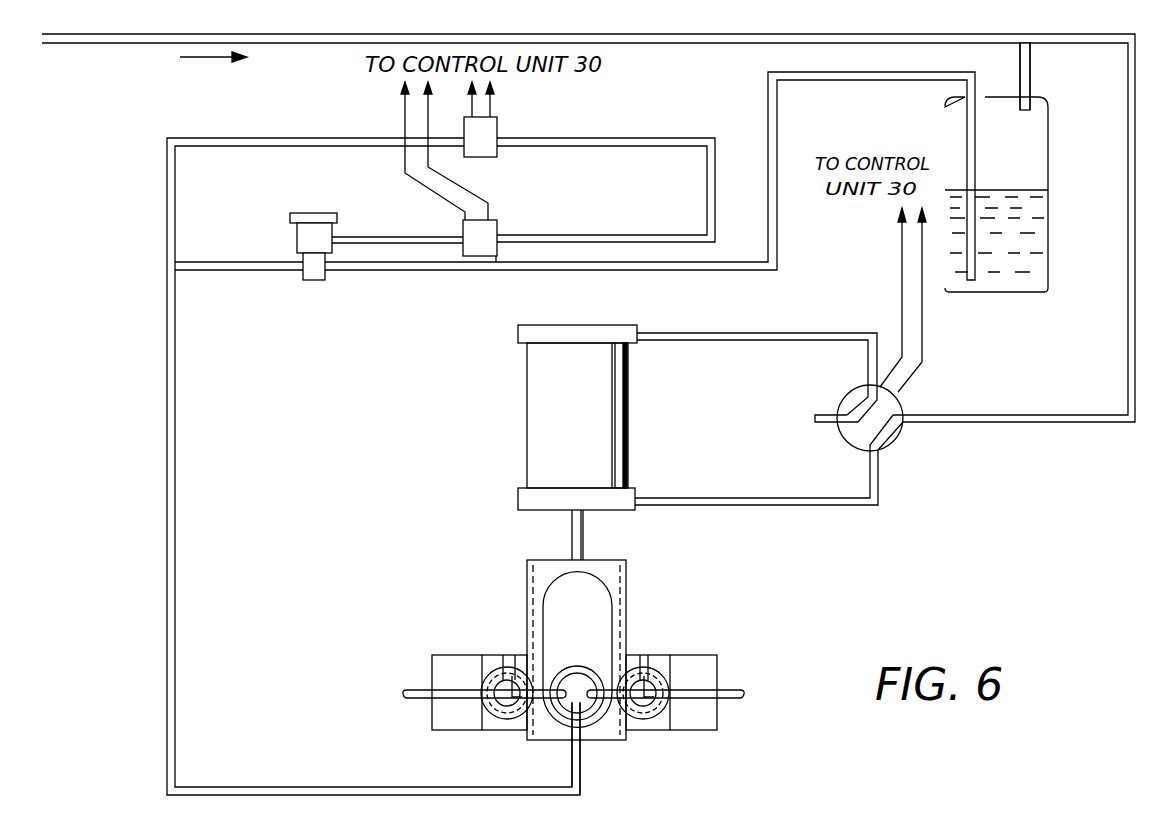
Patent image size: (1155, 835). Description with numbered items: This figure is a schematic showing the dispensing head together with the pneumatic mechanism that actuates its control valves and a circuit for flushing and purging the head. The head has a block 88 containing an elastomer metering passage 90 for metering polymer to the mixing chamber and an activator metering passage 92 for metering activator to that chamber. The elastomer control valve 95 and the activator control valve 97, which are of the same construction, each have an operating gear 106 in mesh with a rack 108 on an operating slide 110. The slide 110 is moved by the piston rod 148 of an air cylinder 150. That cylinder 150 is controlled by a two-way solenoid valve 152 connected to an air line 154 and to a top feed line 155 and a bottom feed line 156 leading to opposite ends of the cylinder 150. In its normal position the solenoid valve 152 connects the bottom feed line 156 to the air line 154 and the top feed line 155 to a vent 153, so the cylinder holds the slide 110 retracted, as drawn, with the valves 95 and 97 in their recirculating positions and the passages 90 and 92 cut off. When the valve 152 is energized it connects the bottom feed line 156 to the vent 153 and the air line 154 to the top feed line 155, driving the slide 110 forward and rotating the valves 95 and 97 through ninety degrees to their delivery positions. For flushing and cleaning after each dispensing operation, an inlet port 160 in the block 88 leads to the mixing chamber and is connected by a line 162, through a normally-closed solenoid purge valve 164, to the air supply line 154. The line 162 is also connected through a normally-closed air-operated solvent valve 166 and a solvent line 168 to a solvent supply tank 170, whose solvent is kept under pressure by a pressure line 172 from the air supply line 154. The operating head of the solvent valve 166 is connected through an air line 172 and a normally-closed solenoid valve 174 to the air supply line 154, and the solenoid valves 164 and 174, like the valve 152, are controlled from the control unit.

The air supply line 154 is at (518, 33).
The line 162 is at (324, 137).
The pressure line 172 is at (656, 235).
The solvent supply tank 170 is at (1035, 162).
The solenoid purge valve 164 is at (500, 128).
The solenoid valve 174 is at (500, 225).
The solvent valve 166 is at (316, 281).
The solvent line 168 is at (497, 271).
The air cylinder 150 is at (600, 431).
The piston rod 148 is at (584, 540).
The top feed line 155 is at (797, 341).
The bottom feed line 156 is at (760, 462).
The two-way solenoid valve 152 is at (895, 451).
The vent 153 is at (825, 424).
The operating slide 110 is at (627, 597).
The rack 108 is at (627, 627).
The block 88 is at (553, 642).
The activator metering passage 92 is at (604, 682).
The elastomer metering passage 90 is at (548, 690).
The operating gear 106 is at (497, 718).
The elastomer control valve 95 is at (497, 655).
The activator control valve 97 is at (670, 675).
The inlet port 160 is at (585, 712).